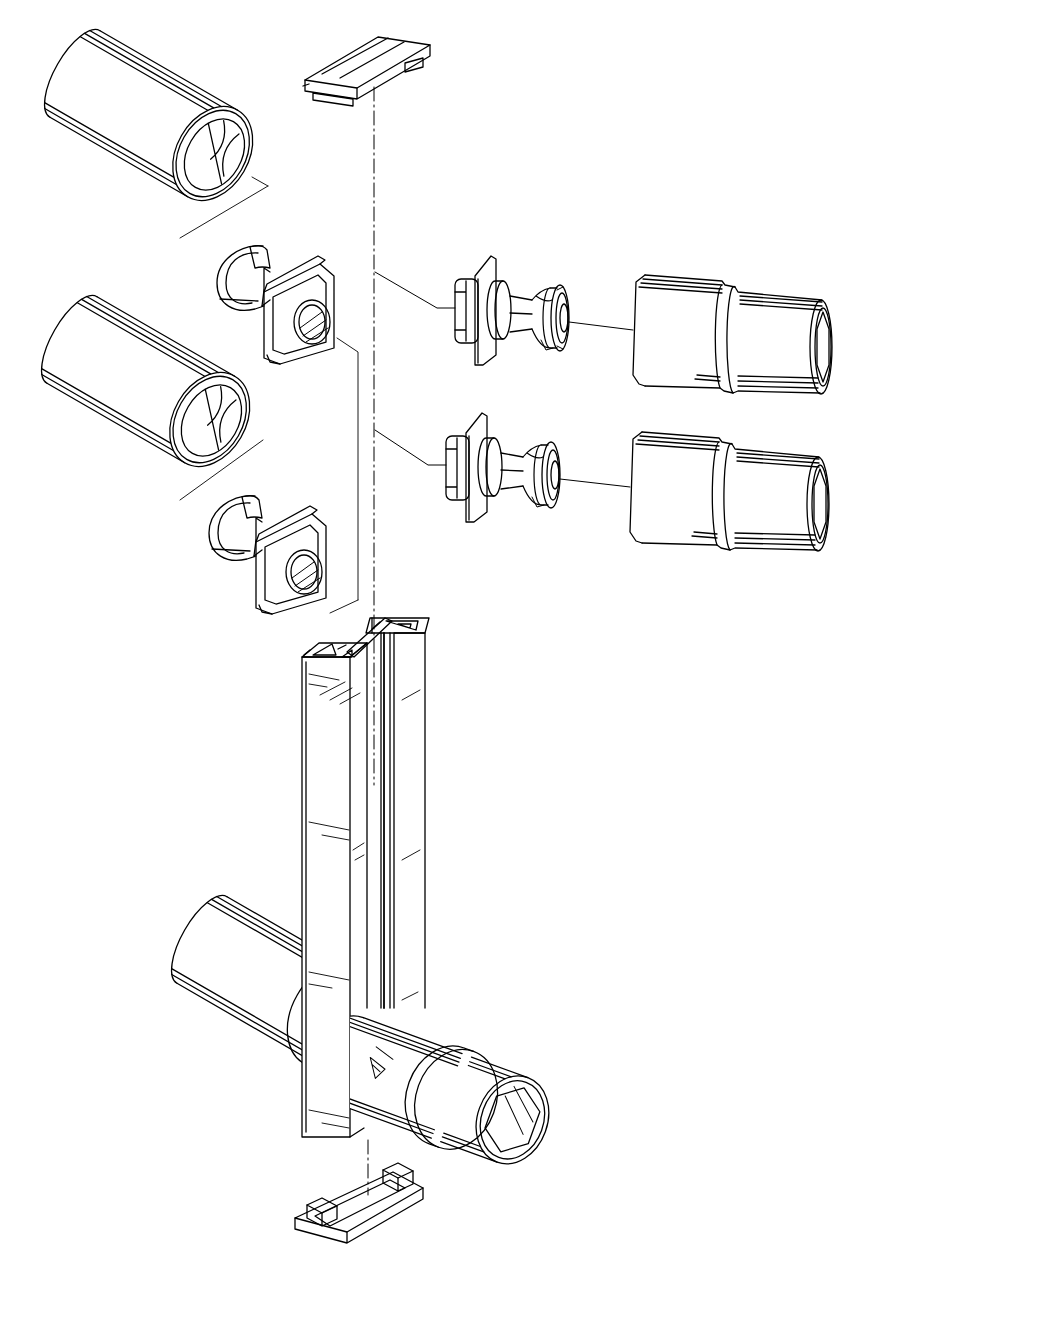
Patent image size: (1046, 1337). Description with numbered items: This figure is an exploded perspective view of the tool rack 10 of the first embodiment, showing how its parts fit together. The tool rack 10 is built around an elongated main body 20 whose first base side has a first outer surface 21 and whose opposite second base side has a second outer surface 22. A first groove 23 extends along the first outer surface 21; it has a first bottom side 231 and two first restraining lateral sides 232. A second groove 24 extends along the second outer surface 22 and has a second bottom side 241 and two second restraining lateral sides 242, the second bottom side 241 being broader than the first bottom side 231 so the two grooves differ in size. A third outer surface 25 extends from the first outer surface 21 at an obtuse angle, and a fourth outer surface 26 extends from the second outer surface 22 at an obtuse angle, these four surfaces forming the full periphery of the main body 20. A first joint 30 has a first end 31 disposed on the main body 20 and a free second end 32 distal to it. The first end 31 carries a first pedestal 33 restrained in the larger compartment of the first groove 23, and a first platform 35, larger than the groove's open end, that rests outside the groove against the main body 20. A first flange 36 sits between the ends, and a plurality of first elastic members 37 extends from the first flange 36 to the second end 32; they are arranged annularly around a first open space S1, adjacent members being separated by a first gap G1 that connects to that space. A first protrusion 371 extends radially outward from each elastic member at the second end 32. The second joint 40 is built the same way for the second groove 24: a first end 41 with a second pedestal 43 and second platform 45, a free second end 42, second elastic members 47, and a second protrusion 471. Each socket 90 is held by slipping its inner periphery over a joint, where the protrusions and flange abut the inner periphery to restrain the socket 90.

The tool rack 10 is at (648, 115).
The main body 20 is at (452, 670).
The first outer surface 21 is at (413, 708).
The second outer surface 22 is at (307, 655).
The first groove 23 is at (385, 724).
The second groove 24 is at (280, 653).
The third outer surface 25 is at (320, 712).
The fourth outer surface 26 is at (400, 617).
The first joint 30 is at (545, 198).
The first end 31 is at (440, 290).
The second end 32 is at (583, 306).
The first pedestal 33 is at (458, 287).
The first platform 35 is at (485, 257).
The first flange 36 is at (502, 280).
The first elastic members 37 is at (545, 297).
The second joint 40 is at (310, 210).
The first end 41 is at (321, 360).
The second end 42 is at (207, 278).
The second pedestal 43 is at (278, 350).
The second platform 45 is at (262, 338).
The second elastic members 47 is at (275, 270).
The socket 90 is at (782, 310).
The first bottom side 231 is at (377, 810).
The first restraining lateral sides 232 is at (368, 778).
The second bottom side 241 is at (352, 646).
The second restraining lateral sides 242 is at (370, 610).
The first protrusion 371 is at (568, 293).
The second protrusion 471 is at (262, 266).
The first gap G1 is at (533, 343).
The first open space S1 is at (575, 337).